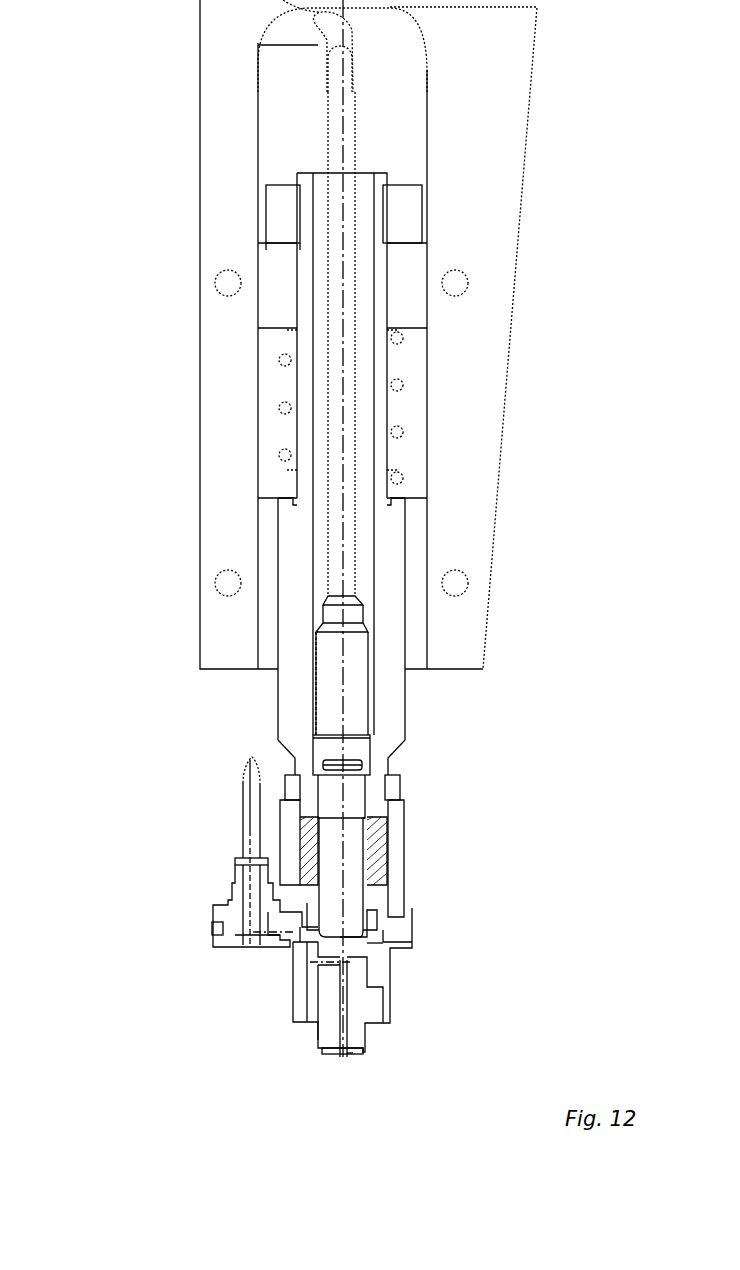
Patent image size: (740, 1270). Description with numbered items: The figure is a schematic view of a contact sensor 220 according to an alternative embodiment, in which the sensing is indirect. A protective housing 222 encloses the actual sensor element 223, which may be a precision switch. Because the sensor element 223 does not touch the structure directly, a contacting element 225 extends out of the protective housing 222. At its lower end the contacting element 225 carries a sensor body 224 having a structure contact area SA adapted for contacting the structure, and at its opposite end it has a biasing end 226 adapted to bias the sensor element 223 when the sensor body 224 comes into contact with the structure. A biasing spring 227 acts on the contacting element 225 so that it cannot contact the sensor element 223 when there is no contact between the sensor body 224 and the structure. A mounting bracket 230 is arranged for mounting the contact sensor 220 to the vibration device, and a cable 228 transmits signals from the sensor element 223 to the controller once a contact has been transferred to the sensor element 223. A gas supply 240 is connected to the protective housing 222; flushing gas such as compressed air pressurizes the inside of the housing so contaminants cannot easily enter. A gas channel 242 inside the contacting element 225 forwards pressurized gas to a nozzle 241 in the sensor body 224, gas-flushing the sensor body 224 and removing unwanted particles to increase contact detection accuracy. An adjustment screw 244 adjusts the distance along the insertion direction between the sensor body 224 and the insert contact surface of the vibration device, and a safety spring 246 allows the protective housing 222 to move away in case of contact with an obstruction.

The contact sensor 220 is at (275, 717).
The protective housing 222 is at (395, 835).
The sensor element 223 is at (348, 863).
The sensor body 224 is at (325, 1057).
The contacting element 225 is at (318, 998).
The biasing end 226 is at (342, 937).
The biasing spring 227 is at (368, 965).
The cable 228 is at (338, 122).
The mounting bracket 230 is at (215, 238).
The gas supply 240 is at (243, 783).
The nozzle 241 is at (342, 1057).
The gas channel 242 is at (340, 1010).
The adjustment screw 244 is at (280, 203).
The safety spring 246 is at (398, 385).
The structure contact area SA is at (350, 1053).